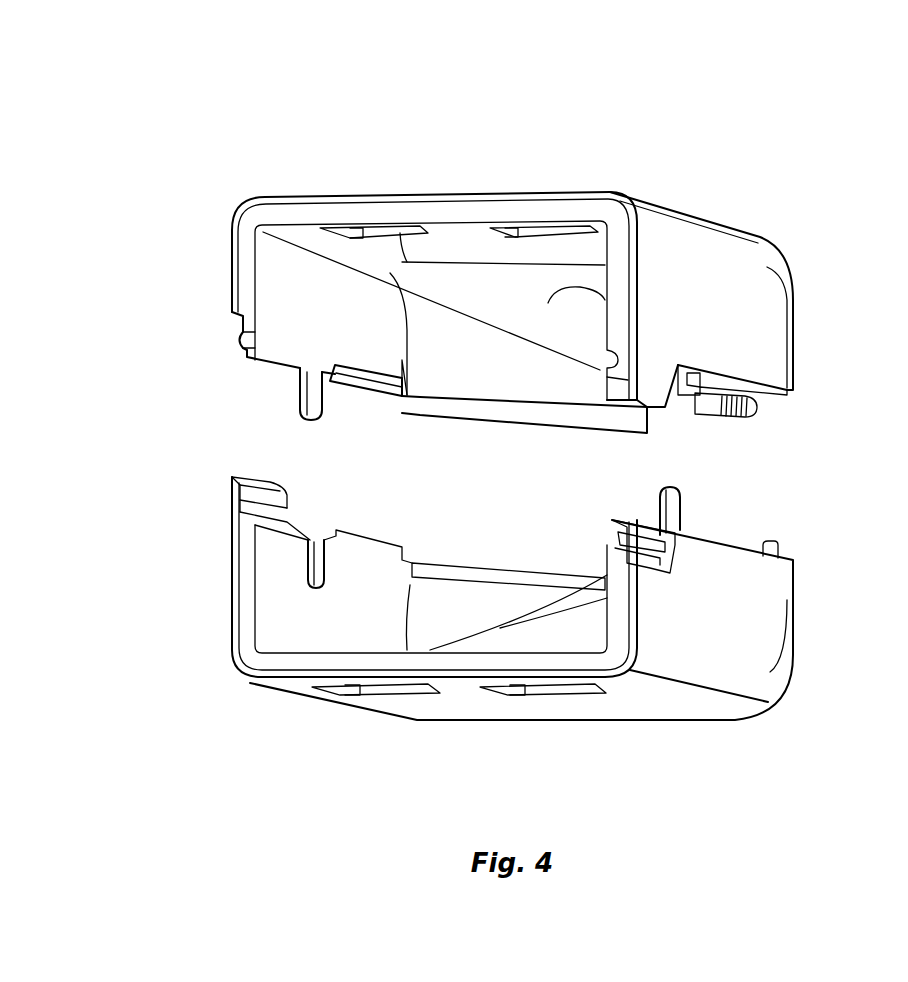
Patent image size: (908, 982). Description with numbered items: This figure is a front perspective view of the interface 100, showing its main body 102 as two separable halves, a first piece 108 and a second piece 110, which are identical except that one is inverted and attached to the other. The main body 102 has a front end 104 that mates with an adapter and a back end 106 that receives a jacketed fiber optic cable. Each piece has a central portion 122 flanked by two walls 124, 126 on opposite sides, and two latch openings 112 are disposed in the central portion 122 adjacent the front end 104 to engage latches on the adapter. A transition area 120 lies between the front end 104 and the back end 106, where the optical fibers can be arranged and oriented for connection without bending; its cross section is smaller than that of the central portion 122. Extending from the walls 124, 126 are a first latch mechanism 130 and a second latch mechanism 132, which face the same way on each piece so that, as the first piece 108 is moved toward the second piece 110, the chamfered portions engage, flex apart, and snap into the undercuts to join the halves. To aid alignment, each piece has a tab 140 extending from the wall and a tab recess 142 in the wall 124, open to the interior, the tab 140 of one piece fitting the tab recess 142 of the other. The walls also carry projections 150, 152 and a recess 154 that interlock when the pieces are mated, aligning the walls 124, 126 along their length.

The interface 100 is at (740, 118).
The main body 102 is at (136, 187).
The front end 104 is at (240, 263).
The back end 106 is at (760, 411).
The first piece 108 is at (716, 721).
The second piece 110 is at (772, 245).
The latch openings 112 is at (540, 236).
The transition area 120 is at (800, 300).
The central portion 122 is at (497, 190).
The wall 124 is at (690, 313).
The wall 126 is at (321, 323).
The first latch mechanism 130 is at (238, 352).
The second latch mechanism 132 is at (658, 410).
The tab 140 is at (308, 426).
The tab recess 142 is at (310, 590).
The projection 150 is at (405, 563).
The projection 152 is at (776, 392).
The recess 154 is at (402, 402).